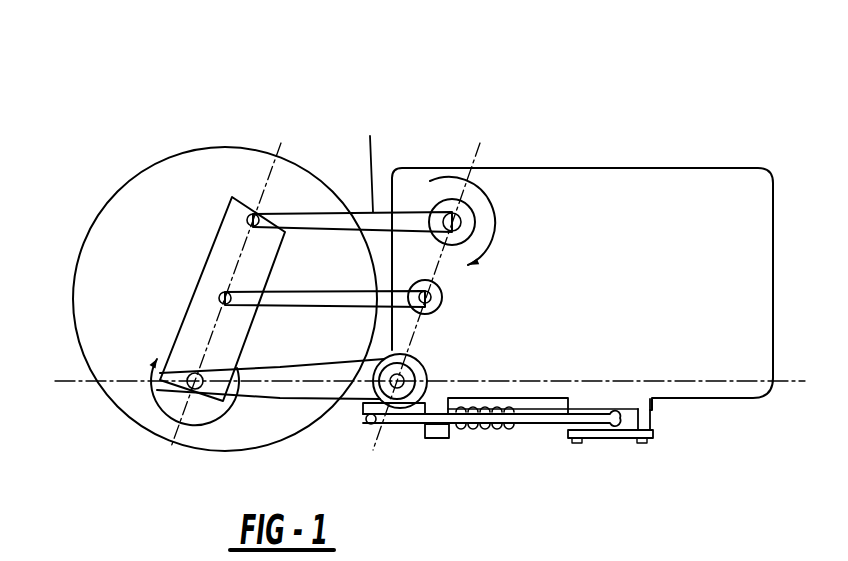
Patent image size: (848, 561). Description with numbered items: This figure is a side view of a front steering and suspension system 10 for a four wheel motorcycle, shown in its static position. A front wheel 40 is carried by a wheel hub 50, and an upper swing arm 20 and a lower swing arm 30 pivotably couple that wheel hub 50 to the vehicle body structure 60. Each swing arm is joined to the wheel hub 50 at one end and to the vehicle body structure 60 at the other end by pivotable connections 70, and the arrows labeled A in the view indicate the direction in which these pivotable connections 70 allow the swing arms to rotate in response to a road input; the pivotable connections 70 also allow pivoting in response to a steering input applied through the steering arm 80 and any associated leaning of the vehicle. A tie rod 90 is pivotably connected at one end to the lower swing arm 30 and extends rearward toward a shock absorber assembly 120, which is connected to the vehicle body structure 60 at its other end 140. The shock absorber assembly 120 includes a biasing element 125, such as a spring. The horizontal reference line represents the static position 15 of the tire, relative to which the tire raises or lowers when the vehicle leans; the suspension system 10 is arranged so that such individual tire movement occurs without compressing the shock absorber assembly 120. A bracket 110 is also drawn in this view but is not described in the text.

The front steering and suspension system 10 is at (335, 88).
The static position 15 is at (803, 383).
The upper swing arm 20 is at (368, 162).
The lower swing arm 30 is at (330, 363).
The front wheel 40 is at (137, 423).
The wheel hub 50 is at (205, 268).
The vehicle body structure 60 is at (710, 167).
The pivotable connection 70 is at (250, 216).
The steering arm 80 is at (345, 291).
The tie rod 90 is at (552, 428).
The bracket 110 is at (630, 434).
The shock absorber assembly 120 is at (499, 438).
The biasing element 125 is at (475, 437).
The other end 140 is at (452, 434).